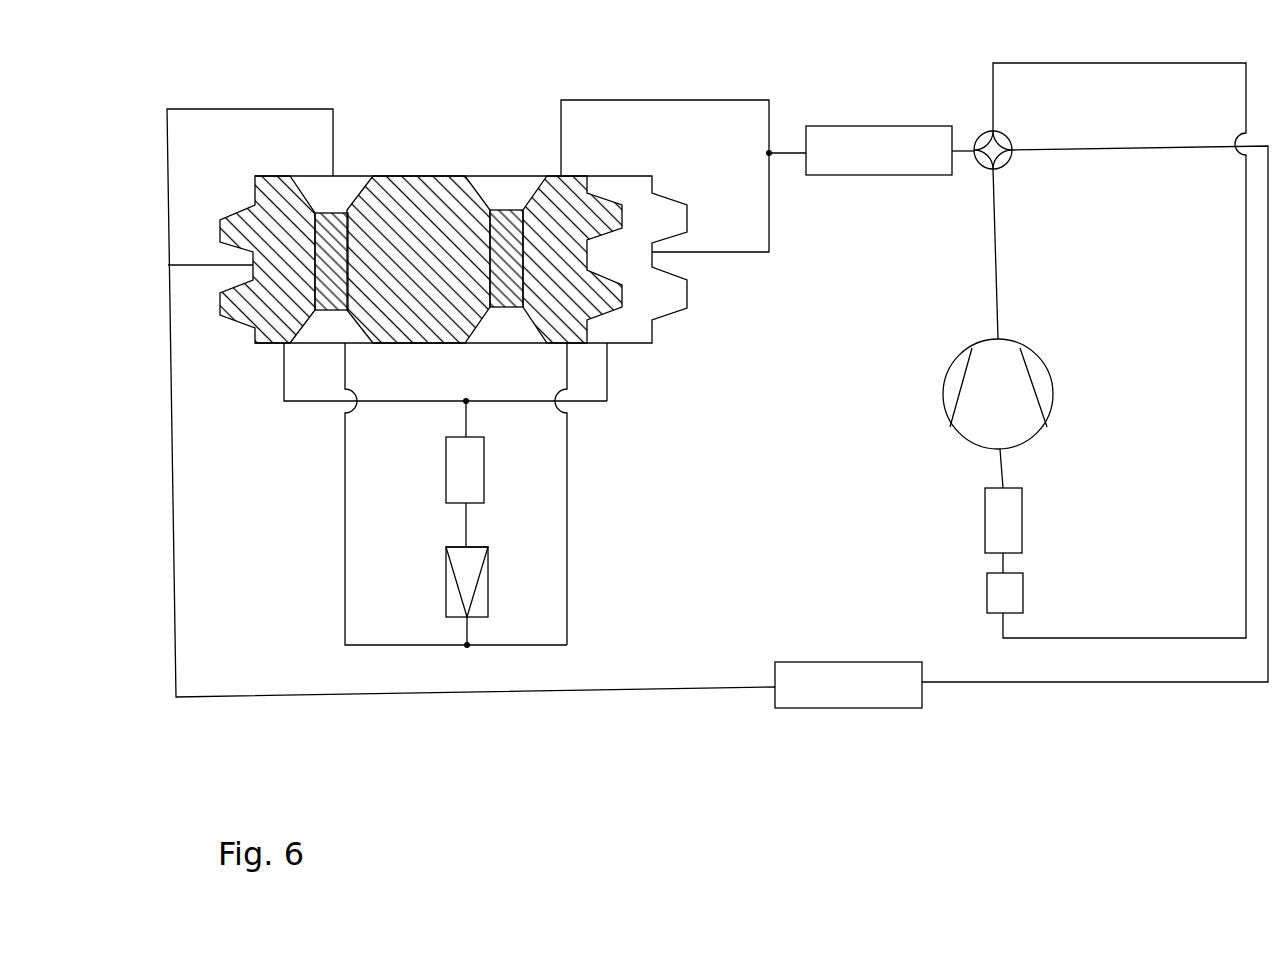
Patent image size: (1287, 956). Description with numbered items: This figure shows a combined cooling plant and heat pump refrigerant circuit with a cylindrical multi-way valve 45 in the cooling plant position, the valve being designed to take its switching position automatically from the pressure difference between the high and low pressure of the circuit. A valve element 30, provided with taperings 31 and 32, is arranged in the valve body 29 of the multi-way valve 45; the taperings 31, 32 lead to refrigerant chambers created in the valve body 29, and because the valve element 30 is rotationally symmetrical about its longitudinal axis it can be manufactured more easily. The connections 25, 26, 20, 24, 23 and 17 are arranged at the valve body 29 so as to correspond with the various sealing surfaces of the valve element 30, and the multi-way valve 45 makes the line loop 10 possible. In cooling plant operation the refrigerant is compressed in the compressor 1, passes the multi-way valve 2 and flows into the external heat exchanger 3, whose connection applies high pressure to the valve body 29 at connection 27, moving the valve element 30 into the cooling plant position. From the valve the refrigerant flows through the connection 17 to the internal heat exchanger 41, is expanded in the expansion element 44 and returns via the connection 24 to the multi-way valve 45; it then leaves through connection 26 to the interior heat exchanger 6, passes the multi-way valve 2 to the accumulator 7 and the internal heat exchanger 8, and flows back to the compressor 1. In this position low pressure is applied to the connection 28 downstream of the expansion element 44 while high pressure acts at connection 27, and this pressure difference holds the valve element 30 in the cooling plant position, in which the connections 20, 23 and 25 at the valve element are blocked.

The compressor 1 is at (1040, 385).
The multi-way valve 2 is at (983, 135).
The external heat exchanger 3 is at (838, 151).
The interior heat exchanger 6 is at (882, 703).
The accumulator 7 is at (1005, 588).
The internal heat exchanger 8 is at (1003, 518).
The line loop 10 is at (466, 528).
The connection 17 is at (607, 371).
The connection 20 is at (284, 371).
The connection 23 is at (567, 371).
The connection 24 is at (345, 375).
The connection 25 is at (561, 143).
The connection 26 is at (333, 138).
The connection 27 is at (739, 252).
The connection 28 is at (210, 265).
The valve body 29 is at (397, 177).
The valve element 30 is at (295, 287).
The tapering 31 is at (333, 238).
The tapering 32 is at (508, 257).
The internal heat exchanger 41 is at (484, 470).
The expansion element 44 is at (466, 576).
The multi-way valve 45 is at (435, 177).